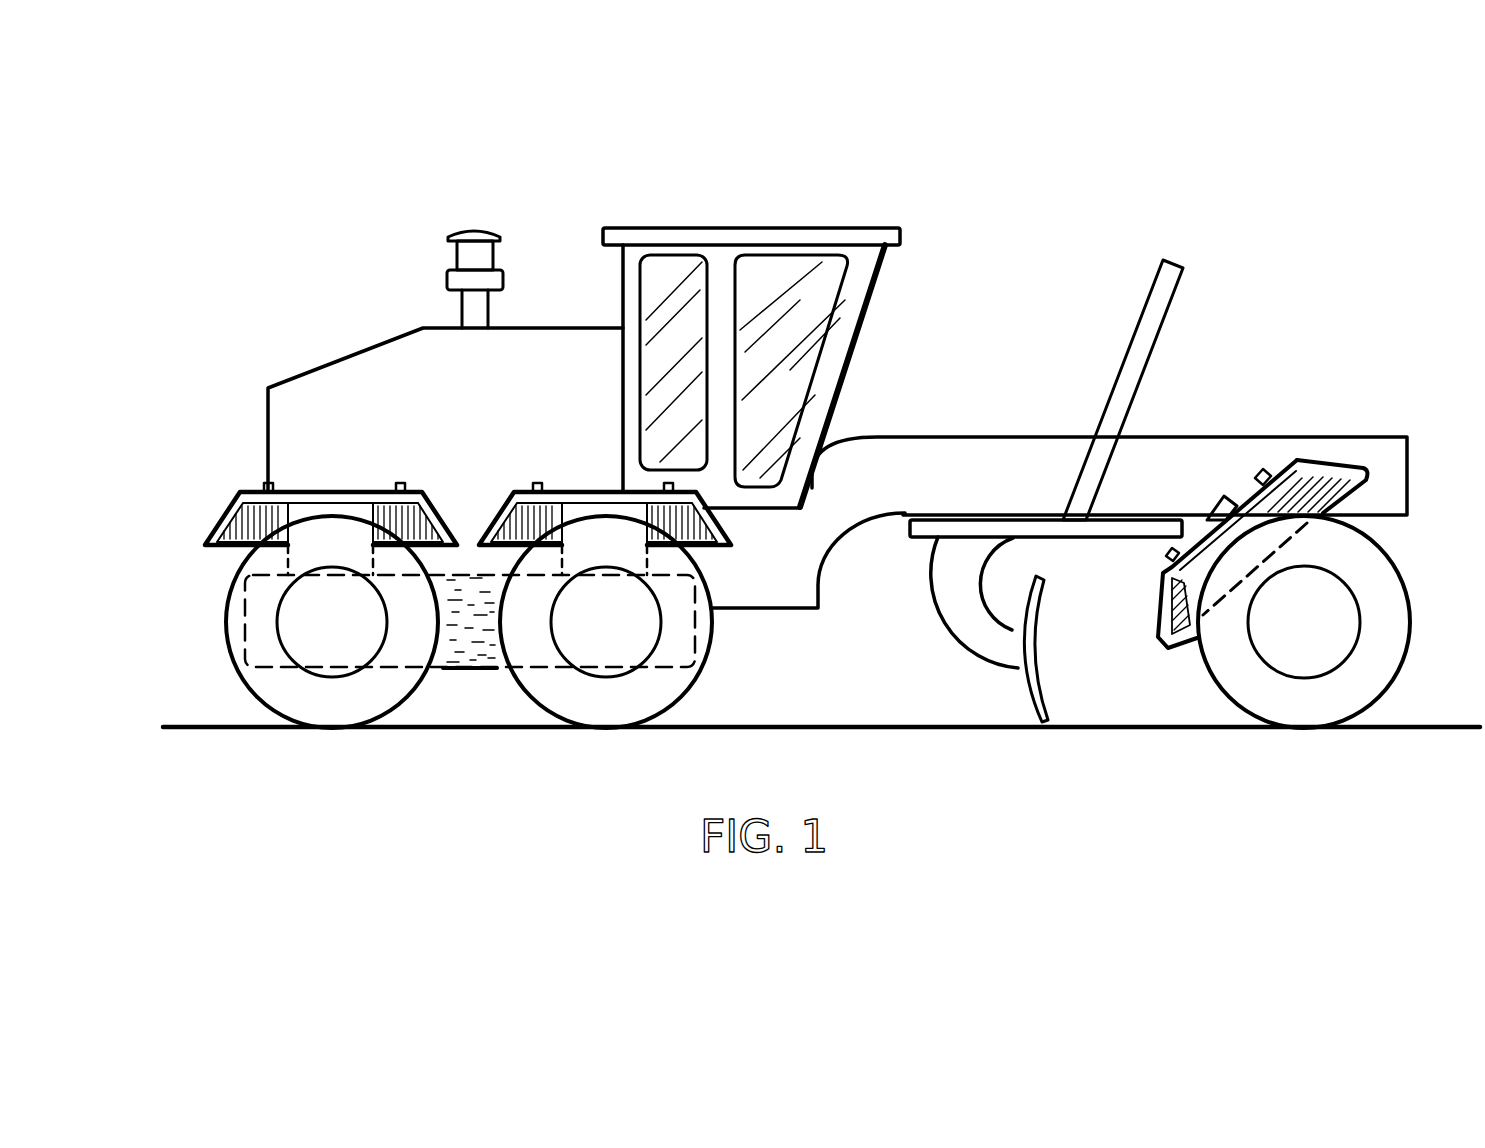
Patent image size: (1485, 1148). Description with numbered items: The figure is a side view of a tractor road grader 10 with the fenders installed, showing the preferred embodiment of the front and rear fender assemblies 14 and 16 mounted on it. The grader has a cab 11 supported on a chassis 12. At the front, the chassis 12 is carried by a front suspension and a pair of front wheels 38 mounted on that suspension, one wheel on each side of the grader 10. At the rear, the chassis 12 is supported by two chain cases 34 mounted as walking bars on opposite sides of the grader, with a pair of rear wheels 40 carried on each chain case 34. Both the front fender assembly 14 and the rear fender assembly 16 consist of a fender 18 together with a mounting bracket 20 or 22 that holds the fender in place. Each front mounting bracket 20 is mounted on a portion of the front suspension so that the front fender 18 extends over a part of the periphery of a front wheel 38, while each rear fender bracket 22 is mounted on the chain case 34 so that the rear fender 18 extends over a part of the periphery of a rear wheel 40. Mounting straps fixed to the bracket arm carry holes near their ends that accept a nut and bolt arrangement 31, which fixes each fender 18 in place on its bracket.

The road grader 10 is at (1018, 278).
The cab 11 is at (852, 342).
The chassis 12 is at (958, 437).
The front fender assembly 14 is at (1303, 447).
The rear fender assembly 16 is at (312, 488).
The fender 18 is at (222, 508).
The front mounting bracket 20 is at (1213, 507).
The rear fender bracket 22 is at (365, 500).
The nut and bolt arrangement 31 is at (1260, 470).
The chain case 34 is at (489, 675).
The front wheel 38 is at (1388, 694).
The rear wheel 40 is at (266, 697).